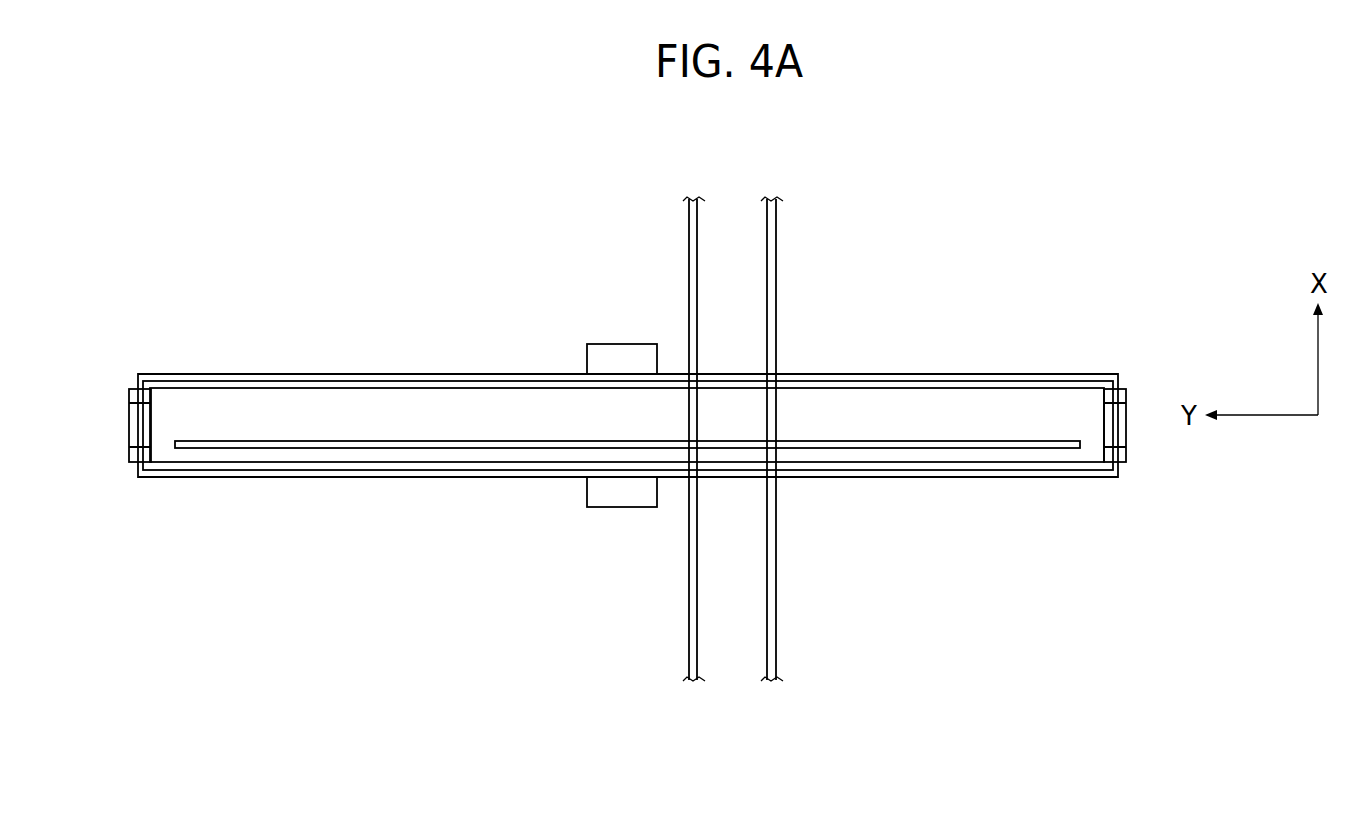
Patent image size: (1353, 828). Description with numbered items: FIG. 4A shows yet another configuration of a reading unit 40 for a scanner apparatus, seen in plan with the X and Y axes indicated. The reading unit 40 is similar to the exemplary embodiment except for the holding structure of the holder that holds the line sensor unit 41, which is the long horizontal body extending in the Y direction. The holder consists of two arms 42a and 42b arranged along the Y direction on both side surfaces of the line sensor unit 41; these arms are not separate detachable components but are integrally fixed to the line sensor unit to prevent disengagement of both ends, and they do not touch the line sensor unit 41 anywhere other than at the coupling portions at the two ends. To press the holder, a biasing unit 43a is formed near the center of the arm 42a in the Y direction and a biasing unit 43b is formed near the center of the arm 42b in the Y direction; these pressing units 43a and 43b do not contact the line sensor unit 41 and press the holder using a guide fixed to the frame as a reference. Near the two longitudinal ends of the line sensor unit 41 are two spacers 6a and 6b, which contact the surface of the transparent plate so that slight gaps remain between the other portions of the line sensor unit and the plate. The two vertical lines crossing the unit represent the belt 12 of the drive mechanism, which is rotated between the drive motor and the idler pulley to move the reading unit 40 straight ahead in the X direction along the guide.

The reading unit 40 is at (225, 284).
The line sensor unit 41 is at (975, 398).
The arm 42a is at (945, 478).
The arm 42b is at (398, 372).
The biasing unit 43a is at (623, 498).
The biasing unit 43b is at (620, 352).
The spacer 6a is at (137, 428).
The spacer 6b is at (1120, 430).
The belt 12 is at (777, 263).